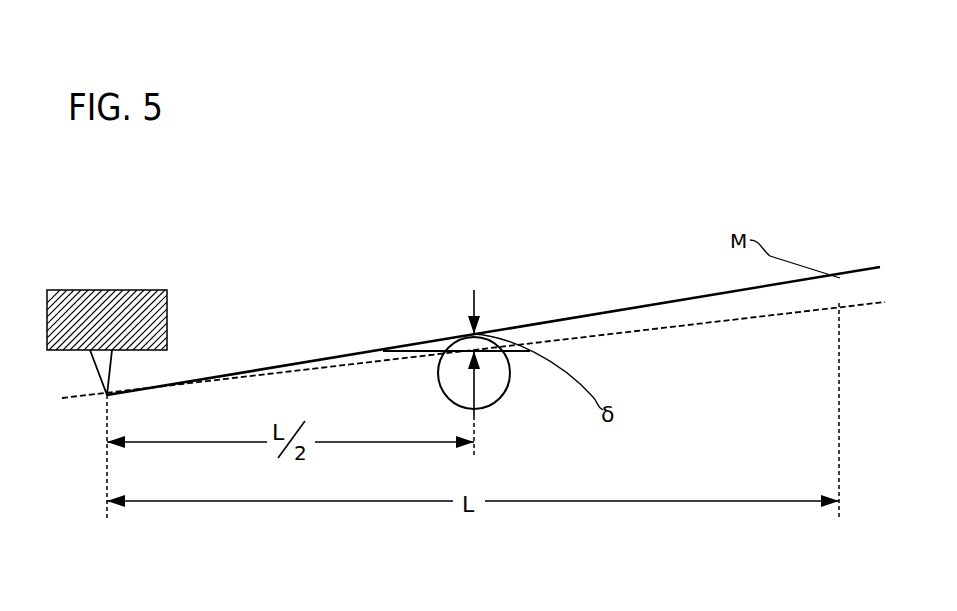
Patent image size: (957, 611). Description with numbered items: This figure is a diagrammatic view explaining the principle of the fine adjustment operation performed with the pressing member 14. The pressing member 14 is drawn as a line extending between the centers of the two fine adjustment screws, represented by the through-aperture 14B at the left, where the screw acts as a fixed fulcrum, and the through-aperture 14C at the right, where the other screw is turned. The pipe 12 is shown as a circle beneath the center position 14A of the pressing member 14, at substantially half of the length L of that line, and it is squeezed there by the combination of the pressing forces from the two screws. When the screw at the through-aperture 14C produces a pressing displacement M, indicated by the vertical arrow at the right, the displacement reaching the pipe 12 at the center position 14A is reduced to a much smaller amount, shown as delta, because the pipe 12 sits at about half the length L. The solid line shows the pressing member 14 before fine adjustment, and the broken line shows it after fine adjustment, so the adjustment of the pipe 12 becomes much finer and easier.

The pipe 12 is at (450, 398).
The pressing member 14 is at (558, 320).
The center position 14A is at (473, 334).
The through-aperture 14B is at (107, 393).
The through-aperture 14C is at (833, 284).